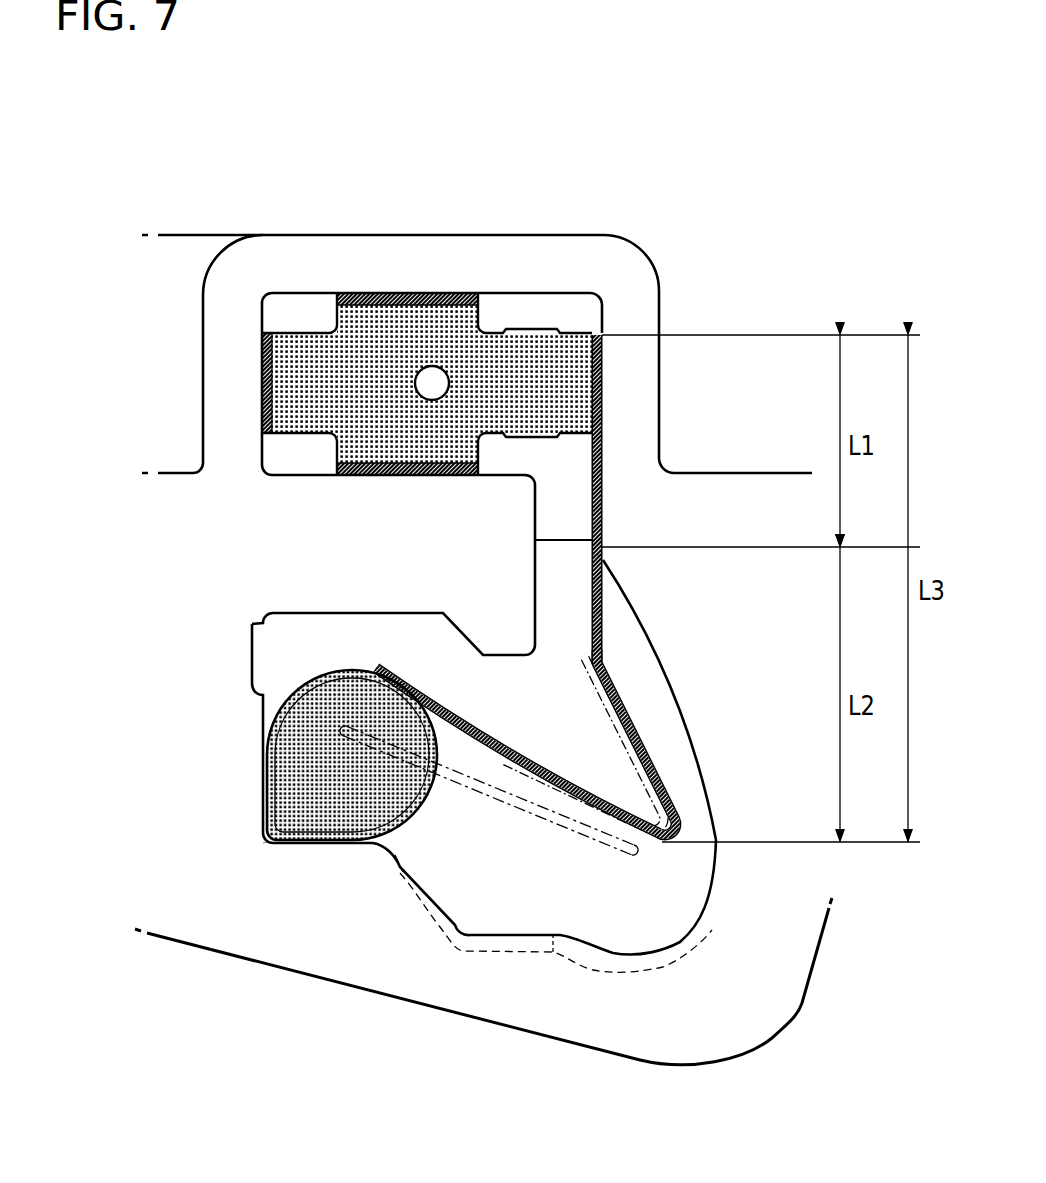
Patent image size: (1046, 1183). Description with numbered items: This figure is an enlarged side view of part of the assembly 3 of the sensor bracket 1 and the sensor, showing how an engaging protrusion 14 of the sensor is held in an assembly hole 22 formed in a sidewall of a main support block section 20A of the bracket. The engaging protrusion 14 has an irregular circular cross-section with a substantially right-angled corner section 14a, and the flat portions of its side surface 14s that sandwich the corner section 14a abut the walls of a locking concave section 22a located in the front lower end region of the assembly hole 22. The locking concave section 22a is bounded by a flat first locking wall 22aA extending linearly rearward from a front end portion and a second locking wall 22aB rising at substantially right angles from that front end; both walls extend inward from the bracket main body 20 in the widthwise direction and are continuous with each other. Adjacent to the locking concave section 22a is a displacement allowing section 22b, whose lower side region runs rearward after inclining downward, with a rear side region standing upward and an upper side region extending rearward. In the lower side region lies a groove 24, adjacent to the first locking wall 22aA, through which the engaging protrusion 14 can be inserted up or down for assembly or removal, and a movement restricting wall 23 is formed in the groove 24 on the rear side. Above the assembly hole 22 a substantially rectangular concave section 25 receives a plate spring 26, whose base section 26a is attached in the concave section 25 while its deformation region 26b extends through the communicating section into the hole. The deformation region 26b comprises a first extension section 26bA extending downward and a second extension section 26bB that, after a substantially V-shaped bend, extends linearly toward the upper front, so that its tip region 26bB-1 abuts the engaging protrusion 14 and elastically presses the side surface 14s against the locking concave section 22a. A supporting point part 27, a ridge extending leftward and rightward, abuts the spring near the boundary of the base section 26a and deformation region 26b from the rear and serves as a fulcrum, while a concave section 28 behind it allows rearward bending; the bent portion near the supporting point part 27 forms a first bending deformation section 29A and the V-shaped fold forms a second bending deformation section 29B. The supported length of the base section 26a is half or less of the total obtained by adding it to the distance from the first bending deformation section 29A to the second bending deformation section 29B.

The sensor bracket 1 is at (477, 303).
The assembly 3 is at (446, 376).
The engaging protrusion 14 is at (483, 865).
The corner section 14a is at (267, 833).
The side surface 14s is at (263, 800).
The bracket main body 20 is at (477, 303).
The main support block section 20A is at (215, 262).
The assembly hole 22 is at (483, 963).
The locking concave section 22a is at (248, 924).
The first locking wall 22aA is at (305, 833).
The second locking wall 22aB is at (262, 802).
The displacement allowing section 22b is at (657, 947).
The movement restricting wall 23 is at (625, 970).
The groove 24 is at (523, 955).
The concave section 25 is at (536, 293).
The plate spring 26 is at (574, 554).
The base section 26a is at (603, 373).
The deformation region 26b is at (574, 775).
The first extension section 26bA is at (597, 645).
The second extension section 26bB is at (517, 767).
The tip region 26bB-1 is at (410, 693).
The supporting point part 27 is at (577, 540).
The concave section 28 is at (660, 643).
The first bending deformation section 29A is at (603, 568).
The second bending deformation section 29B is at (632, 847).